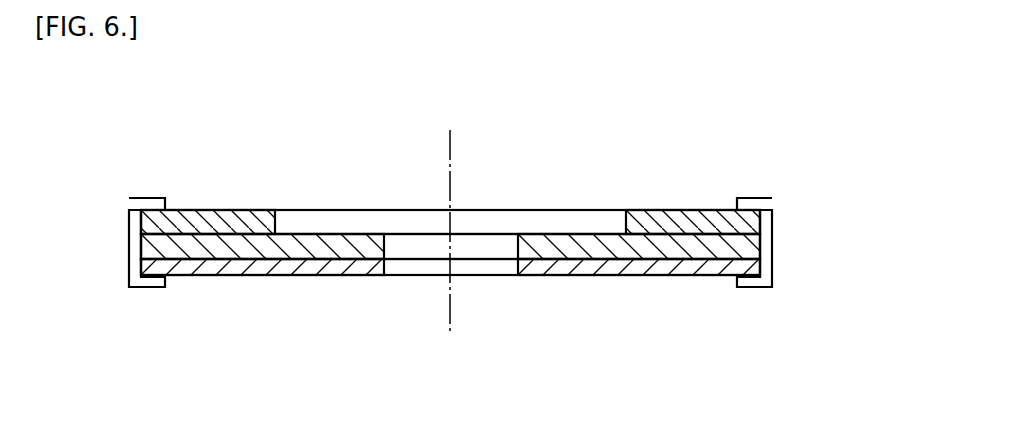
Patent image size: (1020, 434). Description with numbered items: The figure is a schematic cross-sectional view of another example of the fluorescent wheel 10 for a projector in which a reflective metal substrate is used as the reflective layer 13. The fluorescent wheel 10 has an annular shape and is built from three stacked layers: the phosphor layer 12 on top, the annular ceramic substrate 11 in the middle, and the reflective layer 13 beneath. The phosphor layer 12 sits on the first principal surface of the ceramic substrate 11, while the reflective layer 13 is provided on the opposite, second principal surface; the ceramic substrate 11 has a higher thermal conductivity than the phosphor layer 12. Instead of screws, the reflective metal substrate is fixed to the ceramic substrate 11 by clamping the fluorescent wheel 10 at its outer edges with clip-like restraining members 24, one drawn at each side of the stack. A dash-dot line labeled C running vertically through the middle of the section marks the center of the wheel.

The fluorescent wheel 10 is at (710, 137).
The ceramic substrate 11 is at (761, 245).
The phosphor layer 12 is at (718, 208).
The reflective layer 13 is at (761, 269).
The clip-like restraining members 24 is at (149, 287).
The center line C is at (450, 157).